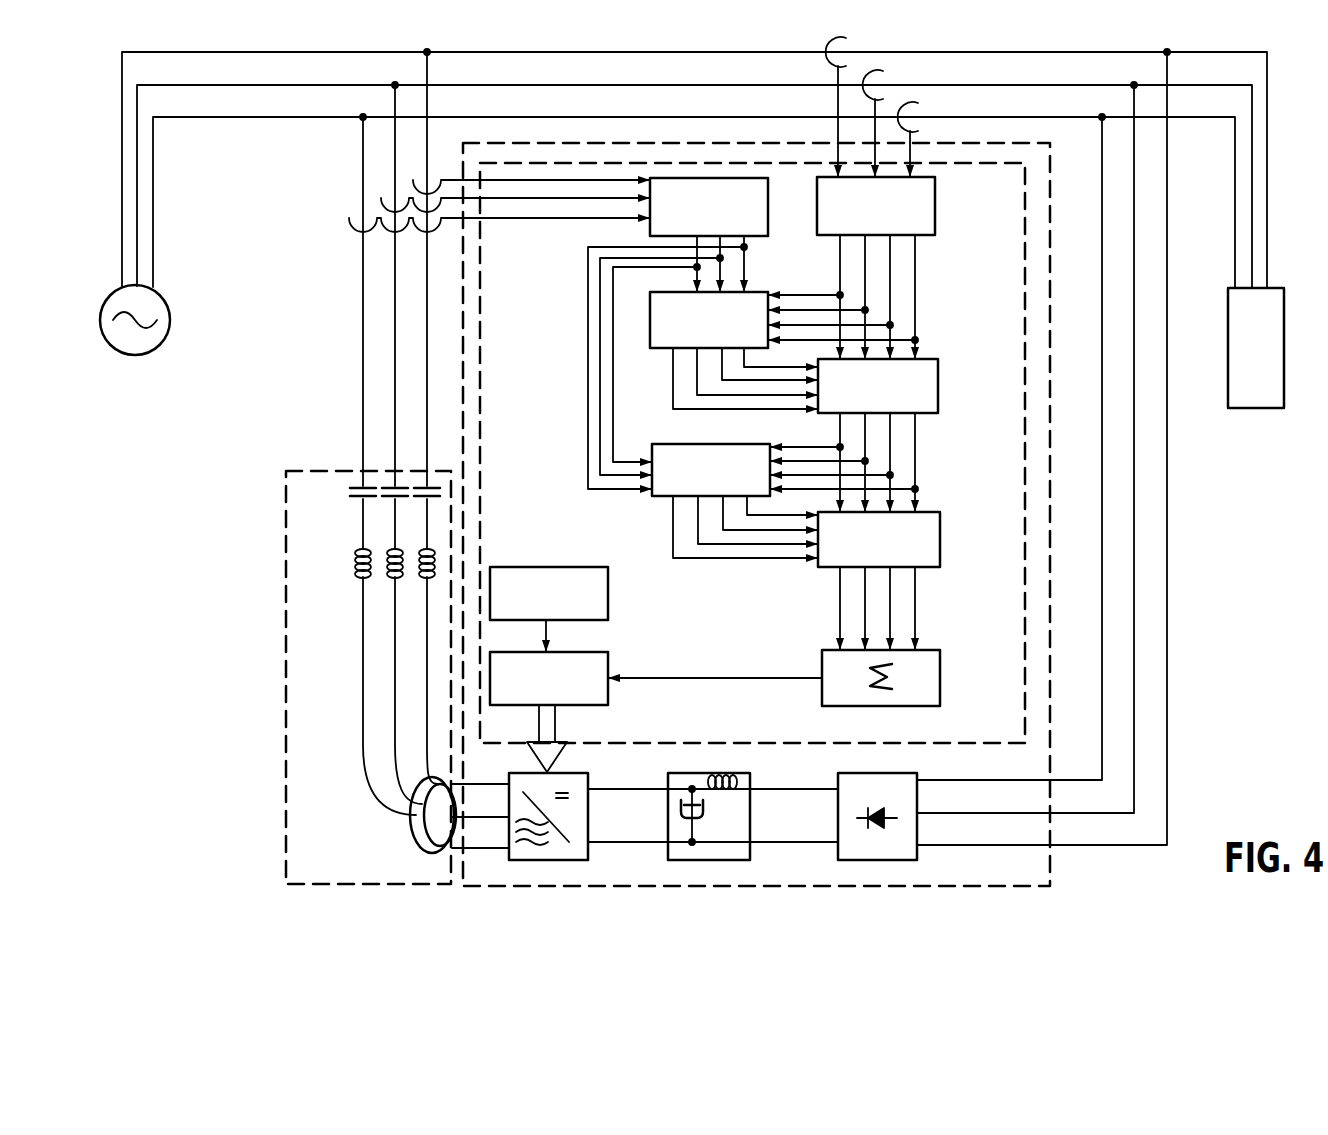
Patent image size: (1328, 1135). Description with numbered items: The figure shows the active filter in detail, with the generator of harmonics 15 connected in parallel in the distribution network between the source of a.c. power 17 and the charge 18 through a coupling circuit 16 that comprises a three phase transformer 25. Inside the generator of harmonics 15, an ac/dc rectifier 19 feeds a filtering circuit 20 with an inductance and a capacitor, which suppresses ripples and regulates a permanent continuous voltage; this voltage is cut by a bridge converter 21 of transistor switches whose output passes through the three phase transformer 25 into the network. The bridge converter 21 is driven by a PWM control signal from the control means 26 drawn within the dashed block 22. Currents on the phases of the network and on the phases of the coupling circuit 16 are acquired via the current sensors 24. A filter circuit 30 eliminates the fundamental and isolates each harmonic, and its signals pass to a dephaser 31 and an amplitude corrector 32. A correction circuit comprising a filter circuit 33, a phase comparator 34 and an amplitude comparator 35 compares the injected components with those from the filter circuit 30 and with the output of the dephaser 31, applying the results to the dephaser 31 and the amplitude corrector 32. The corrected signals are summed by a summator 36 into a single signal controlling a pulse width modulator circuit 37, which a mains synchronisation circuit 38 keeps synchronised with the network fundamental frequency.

The generator of harmonics 15 is at (1050, 882).
The coupling circuit 16 is at (286, 828).
The source of a.c. power 17 is at (170, 318).
The charge 18 is at (1266, 409).
The ac/dc rectifier 19 is at (918, 863).
The filtering circuit 20 is at (735, 863).
The bridge converter 21 is at (600, 872).
The control unit 22 is at (953, 744).
The current sensors 24 is at (341, 222).
The three phase transformer 25 is at (412, 851).
The control means 26 is at (302, 536).
The filter circuit 30 is at (935, 212).
The dephaser 31 is at (938, 393).
The amplitude corrector 32 is at (940, 553).
The filter circuit 33 is at (768, 210).
The phase comparator 34 is at (768, 292).
The amplitude comparator 35 is at (704, 454).
The summator 36 is at (940, 690).
The pulse width modulator circuit 37 is at (608, 663).
The mains synchronisation circuit 38 is at (608, 597).